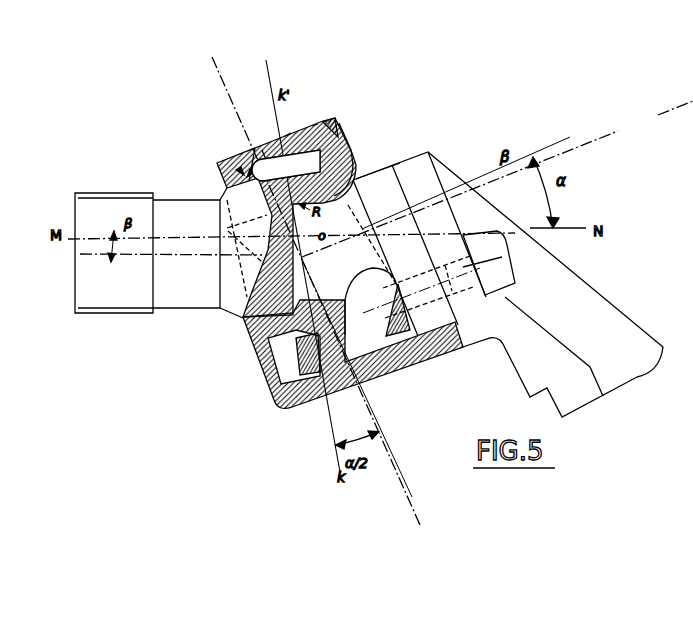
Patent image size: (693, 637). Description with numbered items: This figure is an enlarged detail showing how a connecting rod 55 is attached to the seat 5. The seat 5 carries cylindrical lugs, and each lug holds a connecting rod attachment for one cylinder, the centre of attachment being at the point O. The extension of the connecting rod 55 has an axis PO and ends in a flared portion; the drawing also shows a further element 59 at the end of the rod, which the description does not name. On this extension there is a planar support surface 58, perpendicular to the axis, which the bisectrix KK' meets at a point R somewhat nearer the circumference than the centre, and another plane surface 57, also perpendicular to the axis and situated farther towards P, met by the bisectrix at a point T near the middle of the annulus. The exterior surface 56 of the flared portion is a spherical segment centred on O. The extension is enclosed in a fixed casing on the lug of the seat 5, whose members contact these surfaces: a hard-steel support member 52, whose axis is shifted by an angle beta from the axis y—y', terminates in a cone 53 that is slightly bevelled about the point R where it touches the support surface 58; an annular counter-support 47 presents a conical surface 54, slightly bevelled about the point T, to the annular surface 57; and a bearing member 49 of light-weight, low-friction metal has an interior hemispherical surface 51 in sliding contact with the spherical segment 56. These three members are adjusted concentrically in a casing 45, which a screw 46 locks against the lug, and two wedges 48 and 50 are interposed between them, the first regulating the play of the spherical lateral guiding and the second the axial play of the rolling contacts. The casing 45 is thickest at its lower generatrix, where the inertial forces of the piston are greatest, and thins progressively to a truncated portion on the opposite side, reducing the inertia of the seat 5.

The seat 5 is at (412, 175).
The casing 45 is at (284, 406).
The screw 46 is at (483, 245).
The counter-support 47 is at (220, 165).
The wedge 48 is at (240, 153).
The bearing member 49 is at (289, 135).
The wedge 50 is at (338, 121).
The interior hemispherical surface 51 is at (316, 125).
The support member 52 is at (371, 170).
The cone 53 is at (315, 281).
The conical surface 54 is at (266, 150).
The connecting rod 55 is at (184, 296).
The exterior surface 56 is at (358, 172).
The plane surface 57 is at (316, 161).
The support surface 58 is at (253, 318).
The sleeve 59 is at (97, 313).